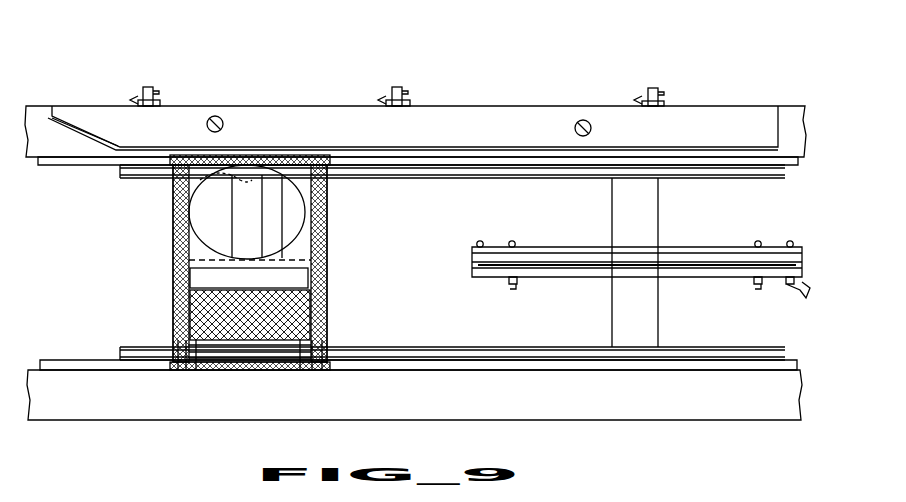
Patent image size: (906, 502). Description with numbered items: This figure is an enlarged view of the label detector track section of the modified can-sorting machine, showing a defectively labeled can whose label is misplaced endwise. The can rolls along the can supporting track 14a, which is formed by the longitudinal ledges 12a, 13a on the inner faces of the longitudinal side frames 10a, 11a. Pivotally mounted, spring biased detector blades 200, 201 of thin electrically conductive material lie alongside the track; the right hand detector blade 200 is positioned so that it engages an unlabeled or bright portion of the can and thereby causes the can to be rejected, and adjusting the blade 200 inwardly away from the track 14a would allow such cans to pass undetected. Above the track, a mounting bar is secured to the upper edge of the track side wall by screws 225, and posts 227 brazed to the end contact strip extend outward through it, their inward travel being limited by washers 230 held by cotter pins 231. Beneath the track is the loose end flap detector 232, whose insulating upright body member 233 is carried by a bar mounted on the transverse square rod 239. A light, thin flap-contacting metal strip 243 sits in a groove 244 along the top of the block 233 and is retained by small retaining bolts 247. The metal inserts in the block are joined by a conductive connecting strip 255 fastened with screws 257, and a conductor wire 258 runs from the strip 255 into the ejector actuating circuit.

The longitudinal side frame 10a is at (108, 408).
The longitudinal side frame 11a is at (38, 138).
The longitudinal ledge 12a is at (95, 365).
The longitudinal ledge 13a is at (76, 158).
The can supporting track 14a is at (198, 392).
The detector blade 200 is at (150, 345).
The detector blade 201 is at (150, 178).
The screw 225 is at (224, 124).
The post 227 is at (148, 87).
The washer 230 is at (138, 103).
The cotter pin 231 is at (159, 92).
The loose end flap detector 232 is at (556, 252).
The upright body member 233 is at (594, 278).
The square rod 239 is at (652, 214).
The flap-contacting metal strip 243 is at (478, 262).
The groove 244 is at (470, 263).
The retaining bolt 247 is at (514, 290).
The connecting strip 255 is at (712, 242).
The screw 257 is at (482, 243).
The conductor wire 258 is at (802, 294).